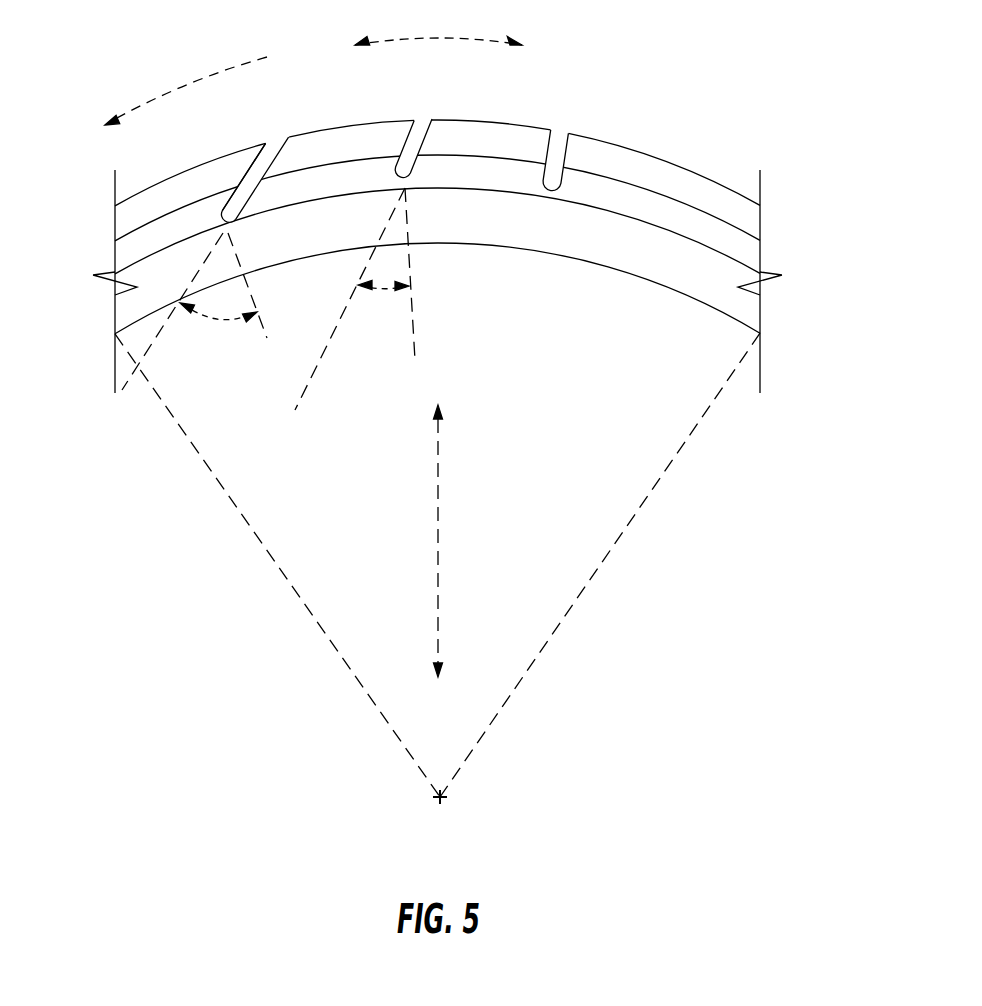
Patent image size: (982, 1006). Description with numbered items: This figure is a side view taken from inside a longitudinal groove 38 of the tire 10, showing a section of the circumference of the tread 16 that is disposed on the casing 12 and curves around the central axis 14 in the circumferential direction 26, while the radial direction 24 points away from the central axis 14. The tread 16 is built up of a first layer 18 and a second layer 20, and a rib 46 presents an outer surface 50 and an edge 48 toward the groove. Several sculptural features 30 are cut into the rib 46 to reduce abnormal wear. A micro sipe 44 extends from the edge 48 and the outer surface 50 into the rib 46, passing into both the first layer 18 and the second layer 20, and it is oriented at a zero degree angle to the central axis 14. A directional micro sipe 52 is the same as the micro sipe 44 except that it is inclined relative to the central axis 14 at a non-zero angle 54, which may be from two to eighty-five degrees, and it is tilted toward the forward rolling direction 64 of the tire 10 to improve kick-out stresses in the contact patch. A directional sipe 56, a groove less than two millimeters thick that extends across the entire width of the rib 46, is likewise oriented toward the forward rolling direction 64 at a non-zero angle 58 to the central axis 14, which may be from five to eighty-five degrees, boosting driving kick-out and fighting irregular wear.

The tire 10 is at (743, 313).
The casing 12 is at (605, 535).
The central axis 14 is at (442, 799).
The tread 16 is at (123, 218).
The first layer 18 is at (640, 173).
The second layer 20 is at (685, 222).
The radial direction 24 is at (438, 542).
The circumferential direction 26 is at (449, 33).
The sculptural feature 30 is at (252, 163).
The longitudinal groove 38 is at (737, 246).
The micro sipe 44 is at (560, 140).
The rib 46 is at (480, 122).
The edge of the rib 48 is at (347, 143).
The outer surface 50 is at (185, 158).
The directional micro sipe 52 is at (412, 143).
The non-zero angle 54 is at (387, 292).
The directional sipe 56 is at (273, 148).
The angle 58 is at (222, 317).
The forward rolling direction 64 is at (193, 82).